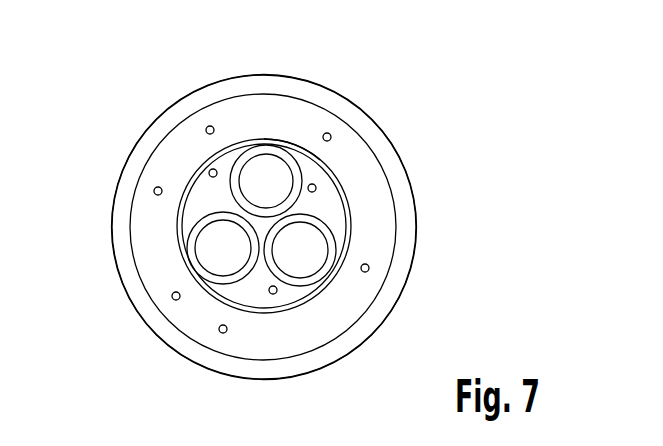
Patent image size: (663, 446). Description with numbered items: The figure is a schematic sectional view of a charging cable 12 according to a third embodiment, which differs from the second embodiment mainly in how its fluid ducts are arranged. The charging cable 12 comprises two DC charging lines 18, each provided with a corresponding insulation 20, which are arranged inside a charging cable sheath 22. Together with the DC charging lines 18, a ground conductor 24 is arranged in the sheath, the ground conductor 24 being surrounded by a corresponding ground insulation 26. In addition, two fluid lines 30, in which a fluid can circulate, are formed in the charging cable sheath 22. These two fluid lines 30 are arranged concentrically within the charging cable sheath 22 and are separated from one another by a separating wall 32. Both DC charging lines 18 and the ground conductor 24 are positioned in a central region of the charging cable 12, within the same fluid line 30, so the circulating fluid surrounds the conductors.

The charging cable 12 is at (118, 148).
The DC charging line 18 is at (220, 267).
The insulation 20 is at (177, 230).
The charging cable sheath 22 is at (363, 327).
The ground conductor 24 is at (268, 170).
The ground insulation 26 is at (233, 167).
The fluid line 30 is at (333, 200).
The separating wall 32 is at (290, 140).